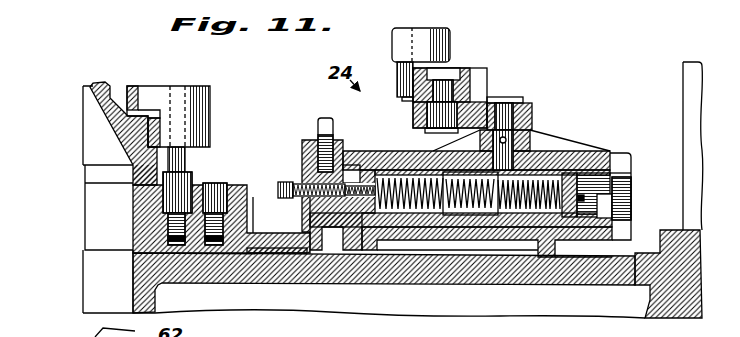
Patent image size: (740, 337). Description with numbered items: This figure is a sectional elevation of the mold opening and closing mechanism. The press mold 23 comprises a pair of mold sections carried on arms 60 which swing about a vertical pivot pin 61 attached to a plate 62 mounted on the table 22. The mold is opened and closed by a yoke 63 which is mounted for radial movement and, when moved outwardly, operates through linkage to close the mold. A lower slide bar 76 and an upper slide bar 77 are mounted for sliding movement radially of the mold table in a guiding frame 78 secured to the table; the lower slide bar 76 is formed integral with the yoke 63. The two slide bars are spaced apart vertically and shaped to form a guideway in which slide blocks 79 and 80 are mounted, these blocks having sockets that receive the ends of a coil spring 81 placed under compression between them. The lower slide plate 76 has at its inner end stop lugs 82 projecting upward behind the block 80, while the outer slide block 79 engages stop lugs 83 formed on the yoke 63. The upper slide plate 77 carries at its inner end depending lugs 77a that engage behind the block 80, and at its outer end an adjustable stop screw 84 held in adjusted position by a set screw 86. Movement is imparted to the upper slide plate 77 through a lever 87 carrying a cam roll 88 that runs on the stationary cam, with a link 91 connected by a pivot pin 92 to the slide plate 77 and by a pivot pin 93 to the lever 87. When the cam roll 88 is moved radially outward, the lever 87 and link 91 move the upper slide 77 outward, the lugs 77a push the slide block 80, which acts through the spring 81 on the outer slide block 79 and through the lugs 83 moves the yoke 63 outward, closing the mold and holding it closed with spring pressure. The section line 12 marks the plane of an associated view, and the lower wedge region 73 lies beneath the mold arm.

The section line 12 is at (133, 183).
The table 22 is at (248, 283).
The press mold 23 is at (90, 94).
The arm 60 is at (155, 78).
The vertical pivot pin 61 is at (186, 162).
The plate 62 is at (235, 186).
The yoke 63 is at (258, 197).
The wedge 73 is at (138, 192).
The lower slide bar 76 is at (520, 220).
The upper slide bar 77 is at (571, 184).
The depending lugs 77a is at (616, 166).
The guiding frame 78 is at (613, 238).
The outer slide block 79 is at (402, 212).
The slide block 80 is at (543, 218).
The coil spring 81 is at (467, 216).
The stop lugs 82 is at (595, 208).
The stop lugs 83 is at (350, 210).
The stop screw 84 is at (285, 181).
The set screw 86 is at (328, 118).
The lever 87 is at (468, 70).
The cam roll 88 is at (448, 33).
The link 91 is at (473, 107).
The pivot pin 92 is at (502, 107).
The pivot pin 93 is at (432, 108).